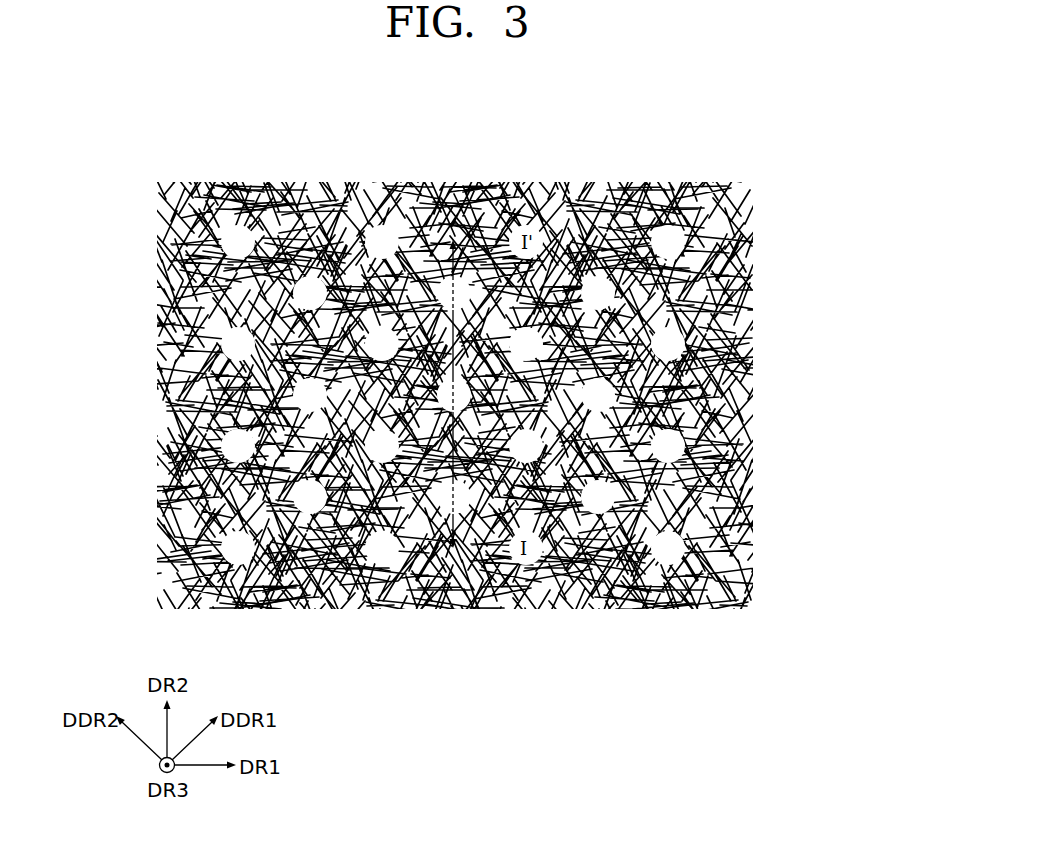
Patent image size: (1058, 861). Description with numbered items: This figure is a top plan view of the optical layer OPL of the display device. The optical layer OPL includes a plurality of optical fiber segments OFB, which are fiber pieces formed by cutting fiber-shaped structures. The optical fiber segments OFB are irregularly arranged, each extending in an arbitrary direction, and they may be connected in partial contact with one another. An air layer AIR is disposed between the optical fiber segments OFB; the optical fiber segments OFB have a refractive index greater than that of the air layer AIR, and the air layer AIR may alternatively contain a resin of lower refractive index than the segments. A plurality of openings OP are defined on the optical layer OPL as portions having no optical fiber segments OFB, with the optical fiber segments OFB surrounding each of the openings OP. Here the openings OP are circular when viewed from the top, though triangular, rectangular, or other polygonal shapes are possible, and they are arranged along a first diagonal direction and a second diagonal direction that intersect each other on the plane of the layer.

The optical layer OPL is at (695, 148).
The optical fiber segments OFB is at (747, 270).
The air layer AIR is at (747, 214).
The openings OP is at (672, 343).